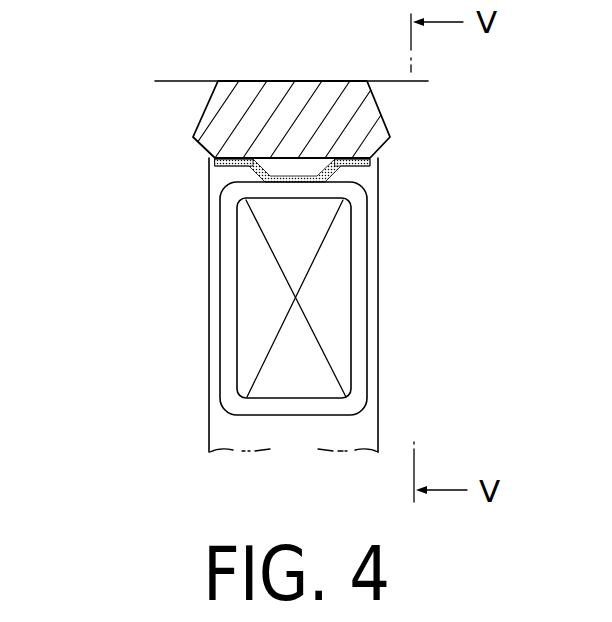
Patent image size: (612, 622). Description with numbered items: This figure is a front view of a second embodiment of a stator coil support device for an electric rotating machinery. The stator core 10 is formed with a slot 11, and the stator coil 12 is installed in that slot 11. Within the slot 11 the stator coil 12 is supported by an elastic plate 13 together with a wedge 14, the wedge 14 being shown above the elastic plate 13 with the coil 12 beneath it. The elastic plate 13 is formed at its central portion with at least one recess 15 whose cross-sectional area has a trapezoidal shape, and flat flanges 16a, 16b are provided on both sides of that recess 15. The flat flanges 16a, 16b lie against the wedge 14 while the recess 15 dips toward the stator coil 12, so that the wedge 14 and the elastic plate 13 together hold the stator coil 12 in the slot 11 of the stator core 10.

The stator core 10 is at (193, 238).
The slot 11 is at (209, 282).
The stator coil 12 is at (260, 337).
The elastic plate 13 is at (95, 142).
The wedge 14 is at (225, 108).
The recess 15 is at (292, 170).
The flat flange 16a is at (218, 166).
The flat flange 16b is at (364, 167).